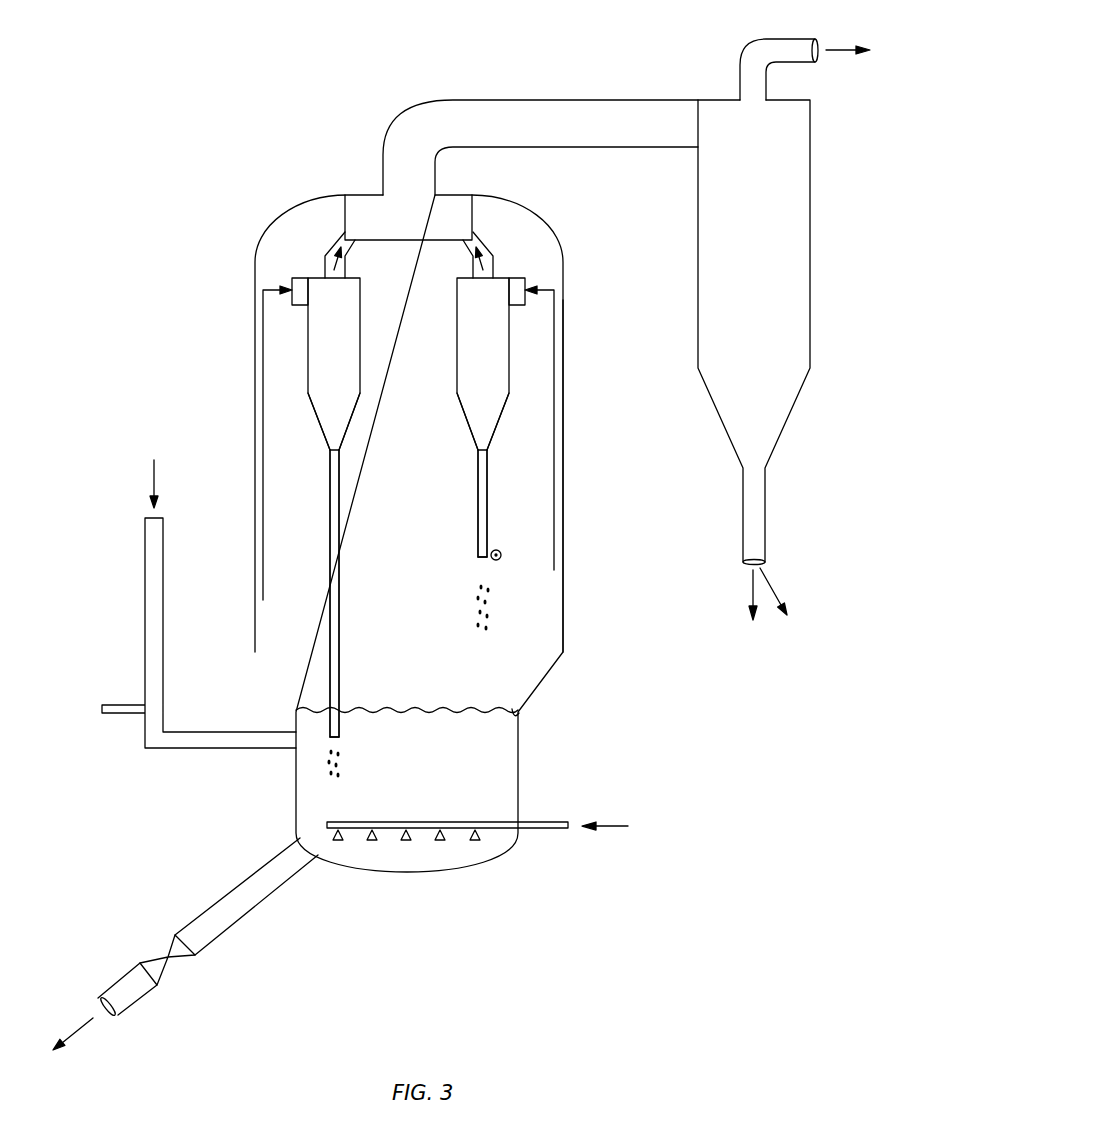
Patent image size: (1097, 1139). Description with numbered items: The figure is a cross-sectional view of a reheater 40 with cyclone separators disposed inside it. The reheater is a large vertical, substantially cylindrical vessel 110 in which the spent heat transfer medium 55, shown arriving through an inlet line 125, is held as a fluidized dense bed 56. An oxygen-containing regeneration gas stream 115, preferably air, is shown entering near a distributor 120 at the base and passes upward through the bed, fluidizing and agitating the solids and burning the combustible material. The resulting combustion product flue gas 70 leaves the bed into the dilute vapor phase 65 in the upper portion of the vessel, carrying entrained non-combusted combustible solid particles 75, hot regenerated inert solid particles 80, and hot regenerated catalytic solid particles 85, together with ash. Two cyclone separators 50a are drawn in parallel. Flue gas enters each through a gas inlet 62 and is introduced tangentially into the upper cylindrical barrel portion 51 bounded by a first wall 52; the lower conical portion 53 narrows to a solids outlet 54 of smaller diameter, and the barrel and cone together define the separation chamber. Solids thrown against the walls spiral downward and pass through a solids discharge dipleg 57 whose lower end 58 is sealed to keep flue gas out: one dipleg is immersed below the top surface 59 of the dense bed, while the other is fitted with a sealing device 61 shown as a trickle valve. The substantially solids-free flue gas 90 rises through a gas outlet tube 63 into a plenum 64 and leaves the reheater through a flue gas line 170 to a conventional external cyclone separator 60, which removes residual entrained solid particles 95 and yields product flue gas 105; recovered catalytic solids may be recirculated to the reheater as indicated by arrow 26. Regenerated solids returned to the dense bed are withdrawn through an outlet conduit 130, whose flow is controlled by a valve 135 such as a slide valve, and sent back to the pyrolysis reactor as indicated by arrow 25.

The arrow indicating return of regenerated solids 25 is at (75, 1040).
The arrow indicating recirculated catalytic solid particles 26 is at (751, 583).
The reheater 40 is at (243, 350).
The cyclone separator 50a is at (465, 507).
The barrel portion 51 is at (408, 507).
The first wall 52 is at (325, 256).
The conical portion 53 is at (352, 421).
The solids outlet 54 is at (342, 450).
The spent heat transfer medium 55 is at (152, 470).
The fluidized dense bed 56 is at (413, 769).
The solids discharge dipleg 57 is at (342, 503).
The lower end of solids discharge dipleg 58 is at (343, 737).
The top surface of fluidized dense bed 59 is at (520, 715).
The external cyclone separator 60 is at (812, 232).
The sealing device 61 is at (502, 552).
The gas inlet 62 is at (296, 278).
The gas outlet tube 63 is at (337, 235).
The plenum 64 is at (408, 217).
The dilute vapor phase 65 is at (423, 382).
The combustion product flue gas 70 is at (263, 592).
The combustible solid particles 75 is at (426, 685).
The hot regenerated inert solid particles 80 is at (426, 685).
The hot regenerated catalytic solid particles 85 is at (490, 617).
The substantially solids-free flue gas 90 is at (336, 270).
The residual entrained solid particles 95 is at (766, 580).
The product flue gas 105 is at (838, 50).
The vessel 110 is at (566, 478).
The oxygen-containing regeneration gas stream 115 is at (617, 826).
The gas distributor 120 is at (485, 822).
The feed conduit 125 is at (145, 607).
The outlet conduit 130 is at (258, 905).
The valve 135 is at (168, 957).
The flue gas line 170 is at (538, 99).